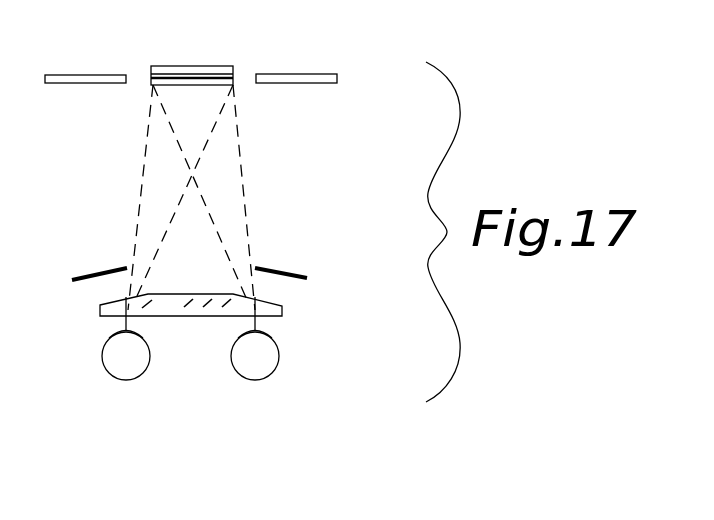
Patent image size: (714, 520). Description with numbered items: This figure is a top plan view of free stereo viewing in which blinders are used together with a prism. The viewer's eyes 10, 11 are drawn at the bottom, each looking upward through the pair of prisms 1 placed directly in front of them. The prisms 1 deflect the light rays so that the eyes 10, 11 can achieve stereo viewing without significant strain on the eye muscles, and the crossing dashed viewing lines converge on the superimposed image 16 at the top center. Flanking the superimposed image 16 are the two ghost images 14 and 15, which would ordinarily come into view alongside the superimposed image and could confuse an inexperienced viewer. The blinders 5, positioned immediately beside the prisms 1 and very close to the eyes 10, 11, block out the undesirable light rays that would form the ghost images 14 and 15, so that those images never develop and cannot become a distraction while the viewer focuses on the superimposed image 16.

The prisms 1 is at (221, 341).
The blinders 5 is at (220, 314).
The viewer's eye 10 is at (152, 368).
The viewer's eye 11 is at (283, 369).
The ghost image 14 is at (176, 12).
The ghost image 15 is at (389, 18).
The superimposed image 16 is at (282, 5).